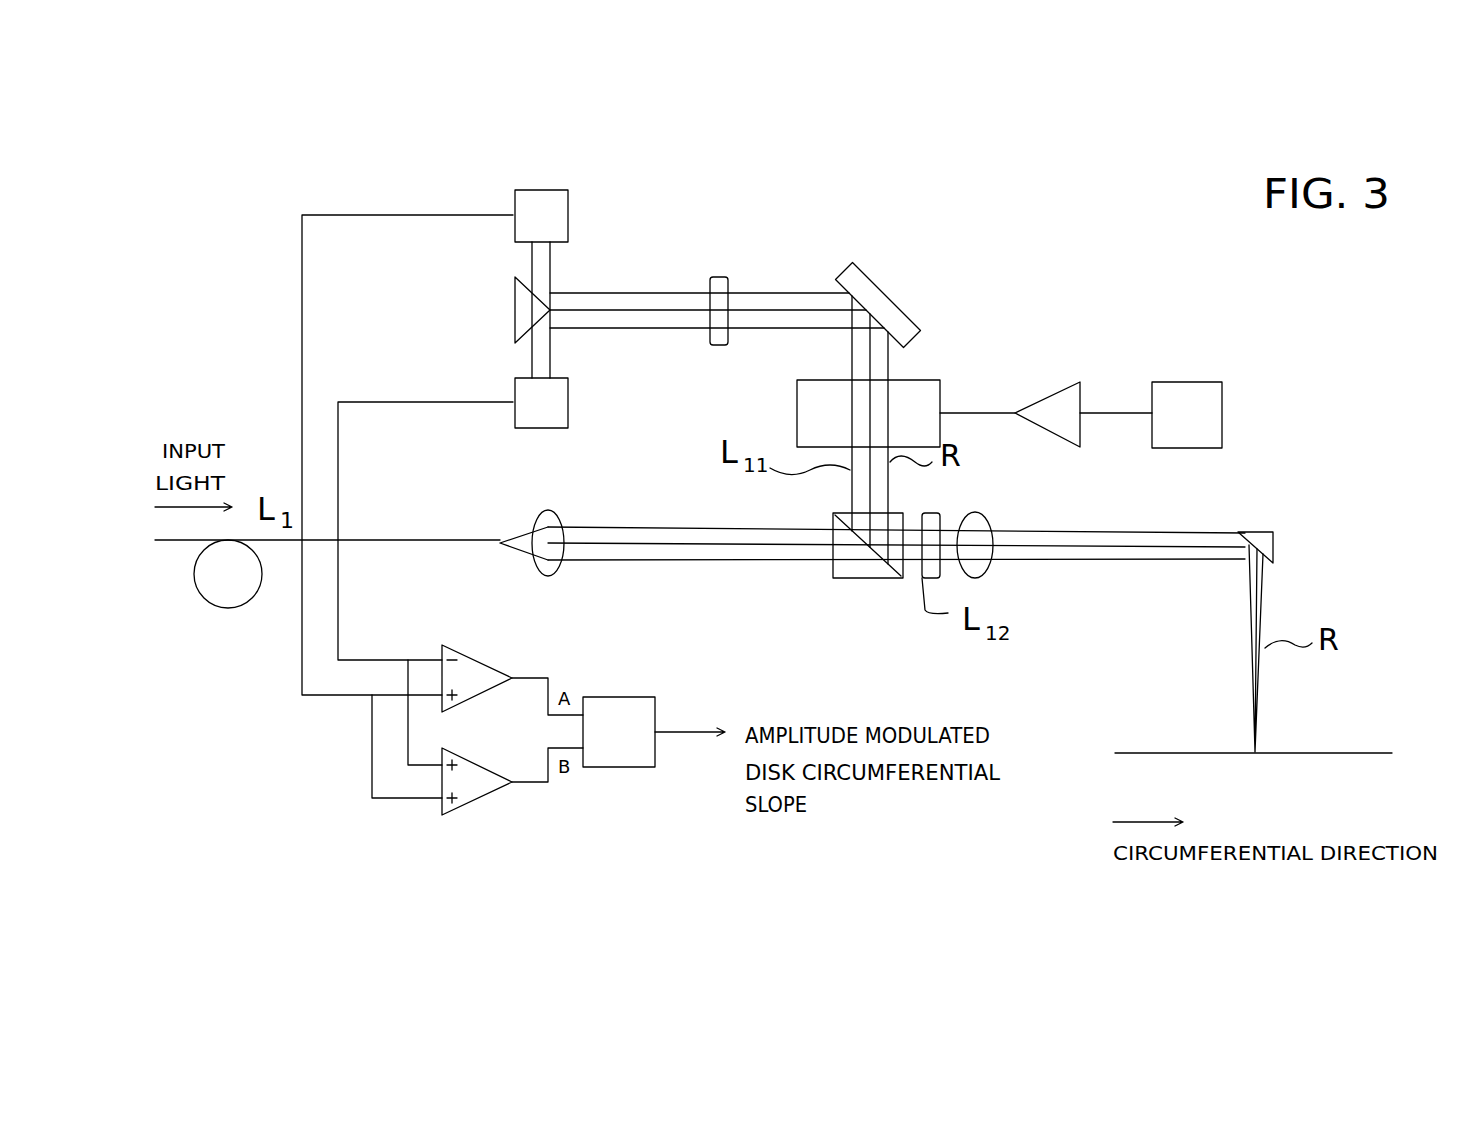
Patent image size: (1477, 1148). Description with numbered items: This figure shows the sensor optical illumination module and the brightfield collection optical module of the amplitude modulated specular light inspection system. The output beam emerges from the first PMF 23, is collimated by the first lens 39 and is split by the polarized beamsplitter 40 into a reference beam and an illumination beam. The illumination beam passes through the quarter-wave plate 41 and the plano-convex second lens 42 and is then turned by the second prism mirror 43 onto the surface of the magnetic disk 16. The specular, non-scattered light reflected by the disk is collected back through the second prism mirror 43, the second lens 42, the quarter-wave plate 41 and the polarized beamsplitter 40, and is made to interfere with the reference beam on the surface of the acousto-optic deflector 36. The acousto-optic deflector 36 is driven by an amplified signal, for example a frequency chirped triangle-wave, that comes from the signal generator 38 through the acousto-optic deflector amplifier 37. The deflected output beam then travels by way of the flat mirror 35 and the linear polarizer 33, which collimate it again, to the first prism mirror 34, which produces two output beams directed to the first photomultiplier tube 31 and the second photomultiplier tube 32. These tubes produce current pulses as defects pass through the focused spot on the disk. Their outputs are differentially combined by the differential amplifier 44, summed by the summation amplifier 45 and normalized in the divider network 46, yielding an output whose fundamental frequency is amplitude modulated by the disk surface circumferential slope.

The magnetic disk 16 is at (1333, 747).
The first PMF 23 is at (155, 538).
The first photomultiplier tube 31 is at (568, 190).
The second photomultiplier tube 32 is at (568, 395).
The linear polarizer 33 is at (728, 280).
The first prism mirror 34 is at (515, 291).
The flat mirror 35 is at (885, 278).
The acousto-optic deflector 36 is at (940, 380).
The acousto-optic deflector amplifier 37 is at (1080, 380).
The signal generator 38 is at (1220, 372).
The first lens 39 is at (560, 510).
The polarized beamsplitter 40 is at (907, 512).
The quarter-wave plate 41 is at (950, 505).
The second lens 42 is at (995, 563).
The second prism mirror 43 is at (1273, 532).
The differential amplifier 44 is at (478, 655).
The summation amplifier 45 is at (490, 790).
The divider network 46 is at (655, 697).